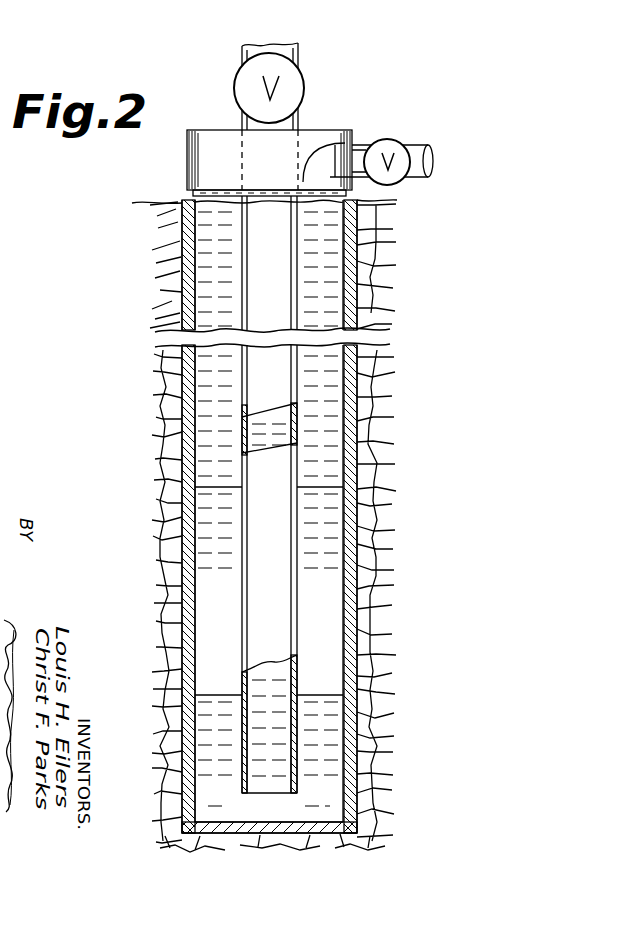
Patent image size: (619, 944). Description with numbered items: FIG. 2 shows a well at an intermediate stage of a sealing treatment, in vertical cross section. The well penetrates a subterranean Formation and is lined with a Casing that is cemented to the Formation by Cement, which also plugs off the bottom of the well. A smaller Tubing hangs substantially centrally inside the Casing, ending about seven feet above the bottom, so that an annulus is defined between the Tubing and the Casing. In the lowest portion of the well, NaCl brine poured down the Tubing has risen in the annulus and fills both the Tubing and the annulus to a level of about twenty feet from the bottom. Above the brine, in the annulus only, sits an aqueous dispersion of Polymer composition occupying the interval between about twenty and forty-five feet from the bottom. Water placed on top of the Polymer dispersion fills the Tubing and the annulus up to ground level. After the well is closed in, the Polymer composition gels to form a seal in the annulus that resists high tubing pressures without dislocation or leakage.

The tubing Tubing is at (253, 235).
The casing Casing is at (178, 300).
The cement Cement is at (360, 256).
The water Water is at (315, 430).
The subterranean formation Formation is at (372, 480).
The polymer composition Polymer is at (315, 565).
The NaCl brine NaCl is at (315, 730).